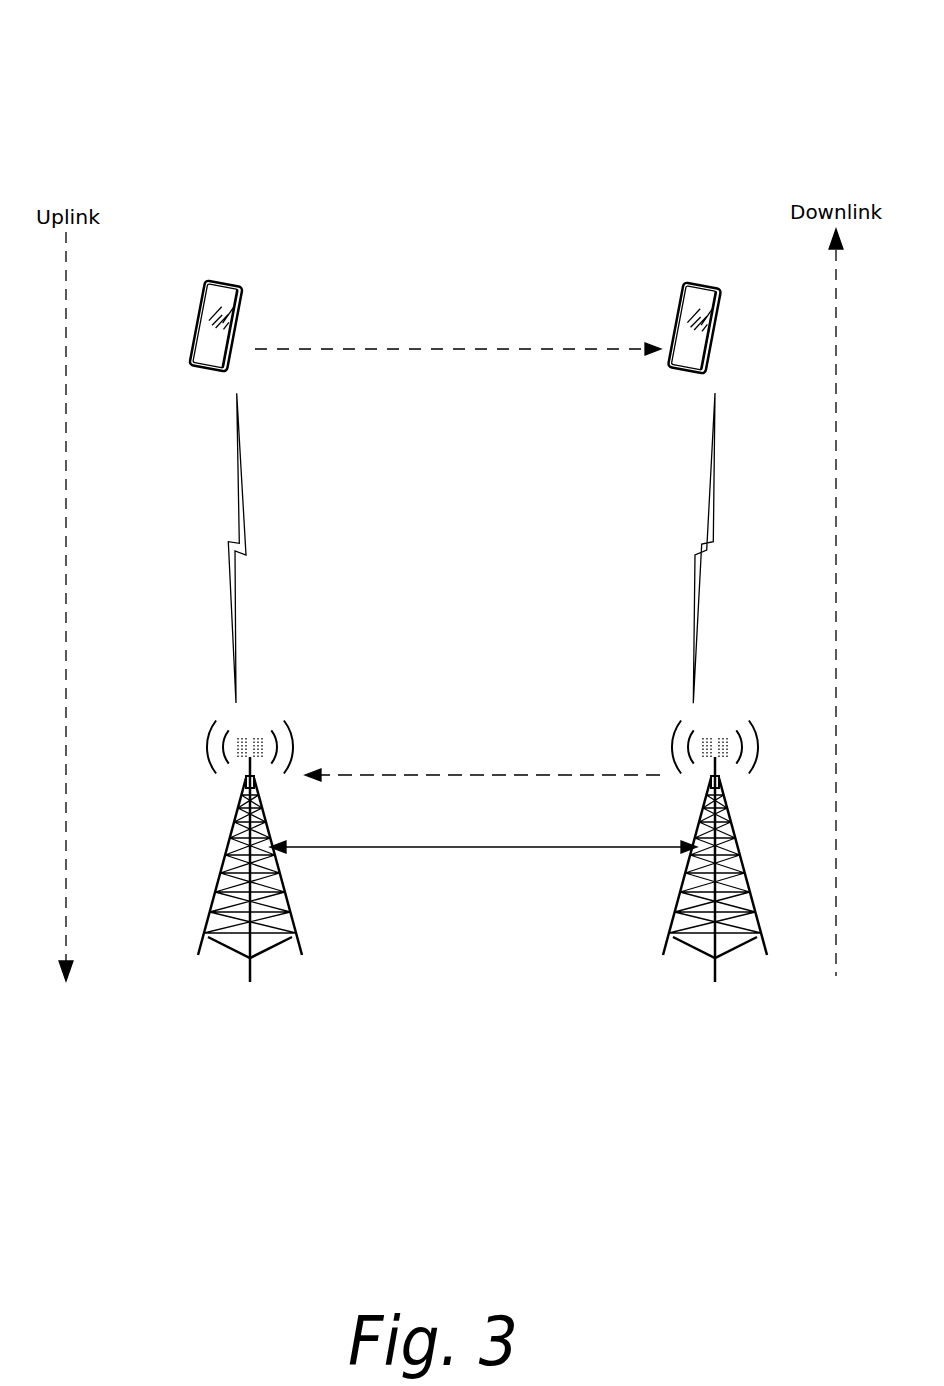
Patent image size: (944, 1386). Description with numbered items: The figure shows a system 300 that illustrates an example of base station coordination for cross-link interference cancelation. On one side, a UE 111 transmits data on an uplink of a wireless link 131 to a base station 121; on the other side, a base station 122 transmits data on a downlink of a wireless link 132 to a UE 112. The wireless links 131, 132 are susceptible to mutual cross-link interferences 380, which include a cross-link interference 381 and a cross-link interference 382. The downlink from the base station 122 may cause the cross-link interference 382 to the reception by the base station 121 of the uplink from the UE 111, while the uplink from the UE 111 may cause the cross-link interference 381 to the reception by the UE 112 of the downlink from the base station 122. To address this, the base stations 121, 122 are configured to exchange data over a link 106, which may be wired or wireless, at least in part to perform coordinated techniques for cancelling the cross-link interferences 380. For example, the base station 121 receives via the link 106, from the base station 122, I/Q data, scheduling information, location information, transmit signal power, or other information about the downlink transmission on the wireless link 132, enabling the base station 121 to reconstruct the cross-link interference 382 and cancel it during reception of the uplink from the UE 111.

The system 300 is at (108, 38).
The cross-link interferences 380 is at (421, 159).
The UE 111 is at (203, 284).
The UE 112 is at (723, 287).
The wireless link 131 is at (229, 540).
The wireless link 132 is at (716, 541).
The base station 121 is at (236, 826).
The base station 122 is at (730, 826).
The cross-link interference 381 is at (386, 348).
The cross-link interference 382 is at (517, 772).
The link 106 is at (438, 845).